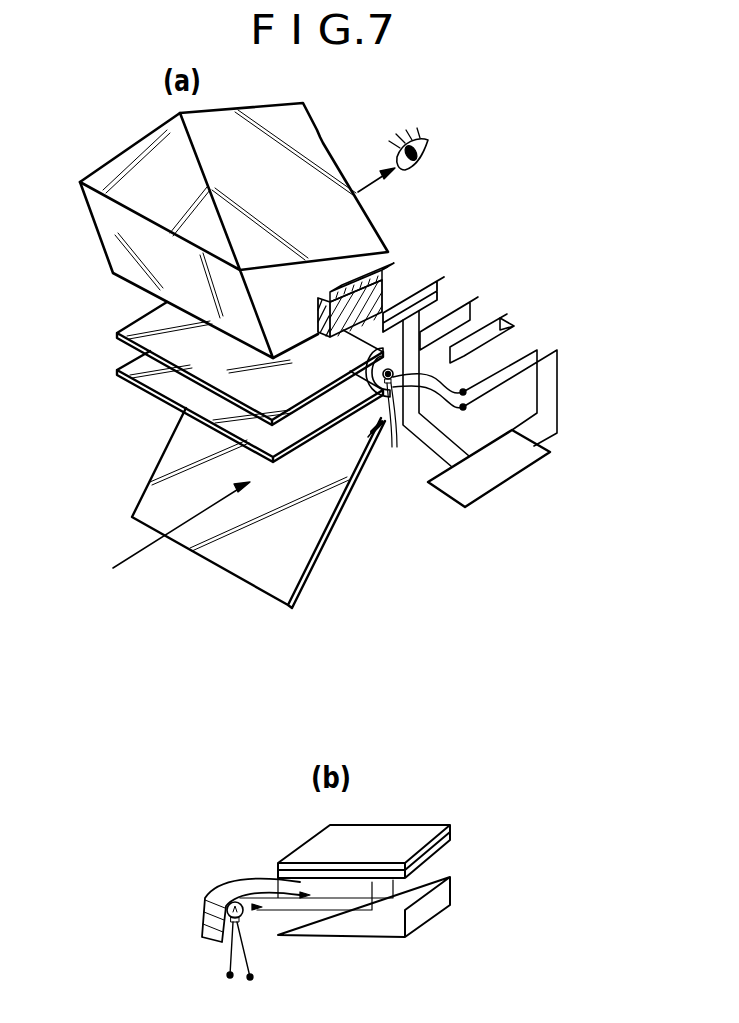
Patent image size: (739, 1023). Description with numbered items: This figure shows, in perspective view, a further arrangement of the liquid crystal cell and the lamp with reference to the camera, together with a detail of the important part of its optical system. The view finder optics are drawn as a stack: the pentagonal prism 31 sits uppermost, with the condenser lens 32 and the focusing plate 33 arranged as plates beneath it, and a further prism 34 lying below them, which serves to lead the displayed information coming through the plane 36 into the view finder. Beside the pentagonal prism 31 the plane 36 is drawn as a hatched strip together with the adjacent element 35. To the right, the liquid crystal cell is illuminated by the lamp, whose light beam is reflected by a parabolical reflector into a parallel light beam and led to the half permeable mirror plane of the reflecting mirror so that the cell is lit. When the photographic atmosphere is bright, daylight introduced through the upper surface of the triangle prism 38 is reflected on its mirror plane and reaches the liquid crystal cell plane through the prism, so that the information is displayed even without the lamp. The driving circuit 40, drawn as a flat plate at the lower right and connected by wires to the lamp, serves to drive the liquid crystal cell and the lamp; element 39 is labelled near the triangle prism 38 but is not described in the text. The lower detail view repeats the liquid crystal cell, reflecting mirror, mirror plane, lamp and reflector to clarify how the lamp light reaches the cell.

The pentagonal prism 31 is at (305, 117).
The condenser lens 32 is at (116, 334).
The focusing plate 33 is at (160, 393).
The prism 34 is at (215, 555).
The filter block 35 is at (388, 288).
The plane 36 is at (392, 262).
The triangle prism 38 is at (494, 353).
The spring 39 is at (507, 313).
The driving circuit 40 is at (490, 490).